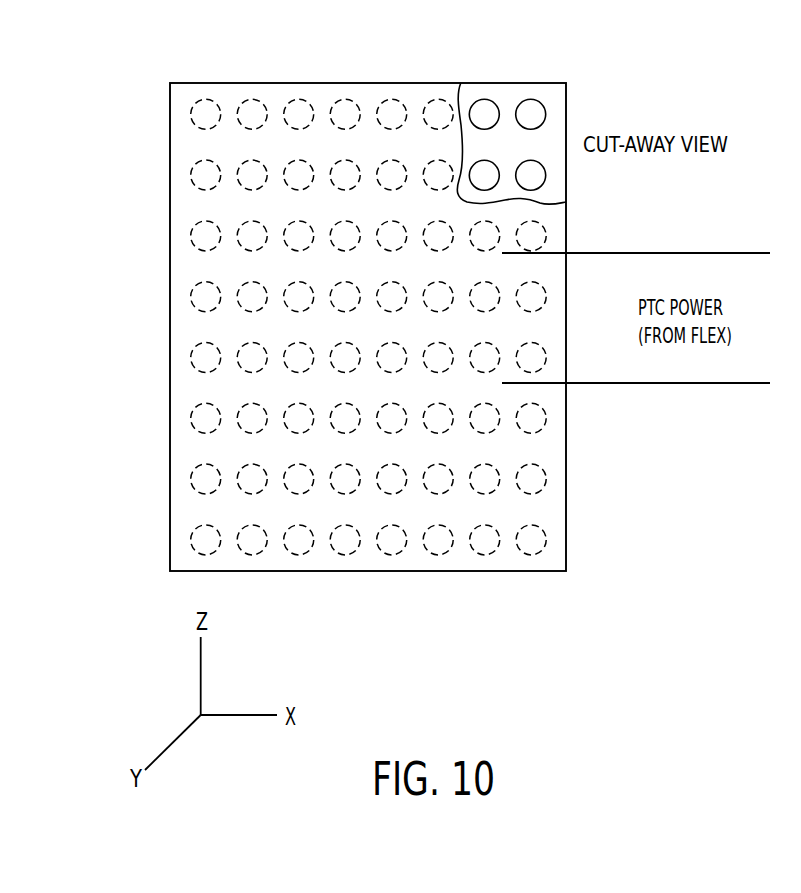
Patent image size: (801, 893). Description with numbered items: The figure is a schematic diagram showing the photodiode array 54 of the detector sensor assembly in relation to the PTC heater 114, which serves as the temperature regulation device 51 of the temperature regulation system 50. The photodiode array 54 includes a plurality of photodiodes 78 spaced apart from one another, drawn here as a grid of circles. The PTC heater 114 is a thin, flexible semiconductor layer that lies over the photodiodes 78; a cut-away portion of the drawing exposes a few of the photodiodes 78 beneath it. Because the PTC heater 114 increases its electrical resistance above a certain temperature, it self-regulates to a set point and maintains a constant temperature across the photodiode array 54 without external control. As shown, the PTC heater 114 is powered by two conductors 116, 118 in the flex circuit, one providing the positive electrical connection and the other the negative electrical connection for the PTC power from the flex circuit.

The temperature regulation system 50 is at (300, 63).
The temperature regulation device 51 is at (278, 63).
The photodiode array 54 is at (542, 117).
The photodiode 78 is at (542, 103).
The PTC heater 114 is at (414, 98).
The conductor 116 is at (634, 253).
The conductor 118 is at (634, 383).